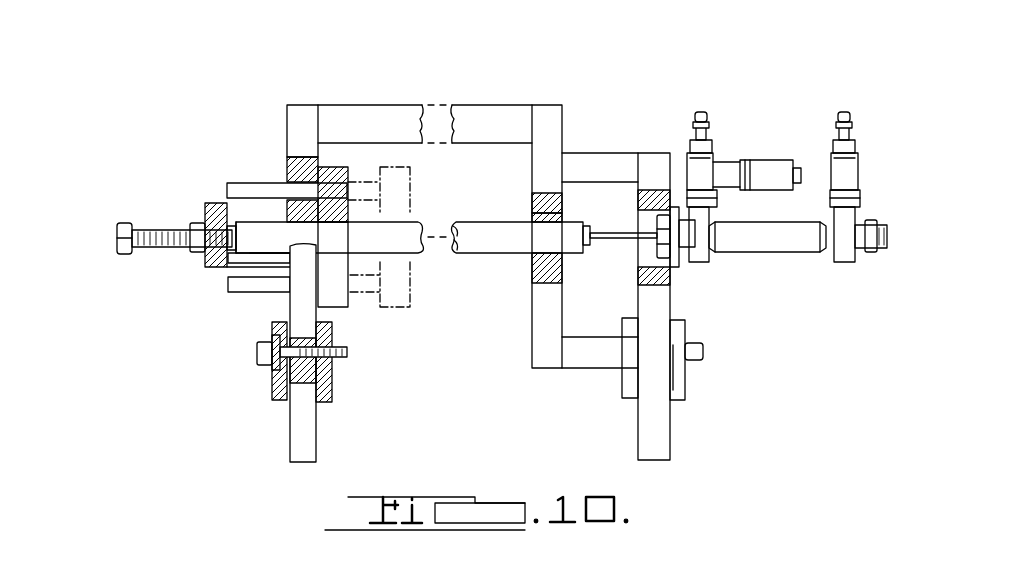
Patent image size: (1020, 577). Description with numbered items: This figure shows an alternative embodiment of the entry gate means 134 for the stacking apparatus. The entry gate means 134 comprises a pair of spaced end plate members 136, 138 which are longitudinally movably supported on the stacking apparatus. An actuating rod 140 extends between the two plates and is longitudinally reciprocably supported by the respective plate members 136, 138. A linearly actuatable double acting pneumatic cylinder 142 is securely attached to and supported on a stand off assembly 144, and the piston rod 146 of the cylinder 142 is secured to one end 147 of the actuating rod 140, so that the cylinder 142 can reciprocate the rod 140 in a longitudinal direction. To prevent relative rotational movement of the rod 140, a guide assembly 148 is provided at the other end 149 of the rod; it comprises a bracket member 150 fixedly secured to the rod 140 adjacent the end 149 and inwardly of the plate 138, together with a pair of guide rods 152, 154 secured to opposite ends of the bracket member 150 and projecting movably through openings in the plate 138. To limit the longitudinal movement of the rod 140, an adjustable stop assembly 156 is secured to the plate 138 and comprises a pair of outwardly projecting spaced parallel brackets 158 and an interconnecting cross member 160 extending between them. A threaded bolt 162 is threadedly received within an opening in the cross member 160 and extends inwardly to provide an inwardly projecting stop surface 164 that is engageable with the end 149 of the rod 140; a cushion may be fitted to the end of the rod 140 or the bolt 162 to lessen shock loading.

The entry gate means 134 is at (637, 88).
The end plate member 136 is at (554, 113).
The end plate member 138 is at (303, 118).
The actuating rod 140 is at (481, 226).
The double acting pneumatic cylinder 142 is at (788, 244).
The stand off assembly 144 is at (672, 300).
The piston rod 146 is at (607, 232).
The end of actuating rod 147 is at (578, 260).
The guide assembly 148 is at (270, 152).
The other end of actuating rod 149 is at (258, 249).
The bracket member 150 is at (338, 303).
The guide rod 152 is at (268, 288).
The guide rod 154 is at (243, 186).
The adjustable stop assembly 156 is at (198, 280).
The brackets 158 is at (265, 264).
The cross member 160 is at (202, 268).
The threaded bolt 162 is at (152, 222).
The stop surface 164 is at (240, 250).